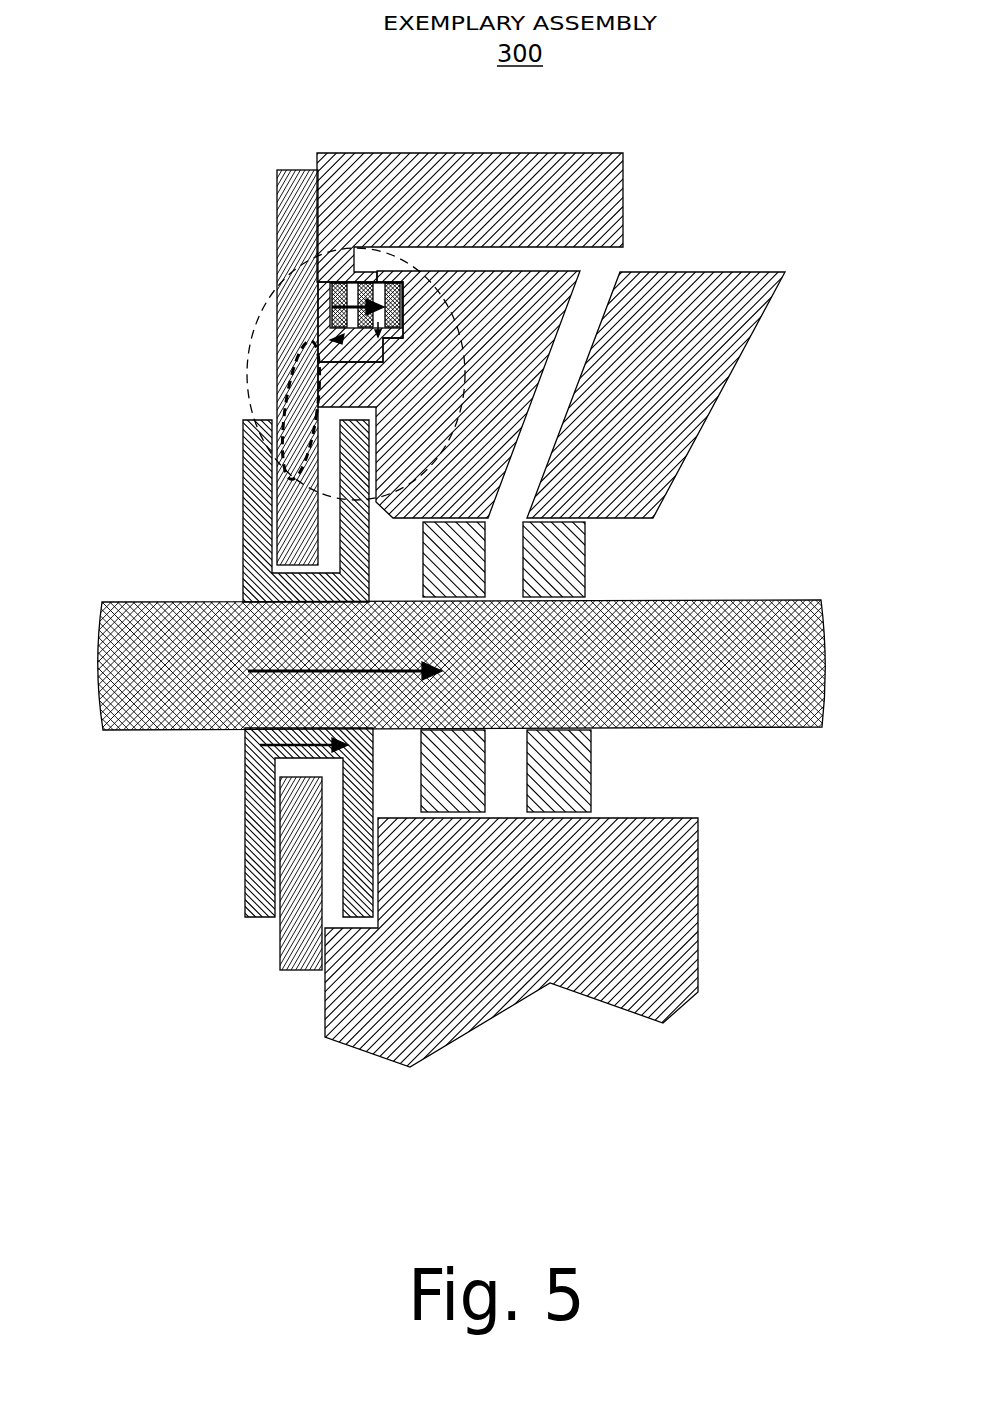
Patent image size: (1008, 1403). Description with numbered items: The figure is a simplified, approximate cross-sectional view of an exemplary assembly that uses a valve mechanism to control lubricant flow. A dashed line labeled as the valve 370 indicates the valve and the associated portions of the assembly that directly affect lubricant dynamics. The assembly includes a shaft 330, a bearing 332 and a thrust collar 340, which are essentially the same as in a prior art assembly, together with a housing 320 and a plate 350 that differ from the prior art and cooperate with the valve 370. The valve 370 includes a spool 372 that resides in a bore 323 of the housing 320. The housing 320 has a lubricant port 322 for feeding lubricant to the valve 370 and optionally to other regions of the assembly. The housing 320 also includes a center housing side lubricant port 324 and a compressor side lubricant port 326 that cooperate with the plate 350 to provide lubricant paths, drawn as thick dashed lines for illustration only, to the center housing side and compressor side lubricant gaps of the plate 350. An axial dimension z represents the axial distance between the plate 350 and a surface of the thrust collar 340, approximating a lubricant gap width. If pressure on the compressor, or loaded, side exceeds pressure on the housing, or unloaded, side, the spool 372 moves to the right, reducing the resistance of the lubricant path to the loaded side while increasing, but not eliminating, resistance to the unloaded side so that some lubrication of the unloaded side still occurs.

The housing 320 is at (340, 153).
The lubricant port 322 is at (623, 153).
The bore 323 is at (380, 280).
The center housing side lubricant port 324 is at (325, 362).
The compressor side lubricant port 326 is at (372, 352).
The shaft 330 is at (549, 677).
The bearing 332 is at (560, 592).
The thrust collar 340 is at (243, 470).
The plate 350 is at (277, 213).
The valve 370 is at (253, 332).
The spool 372 is at (312, 250).